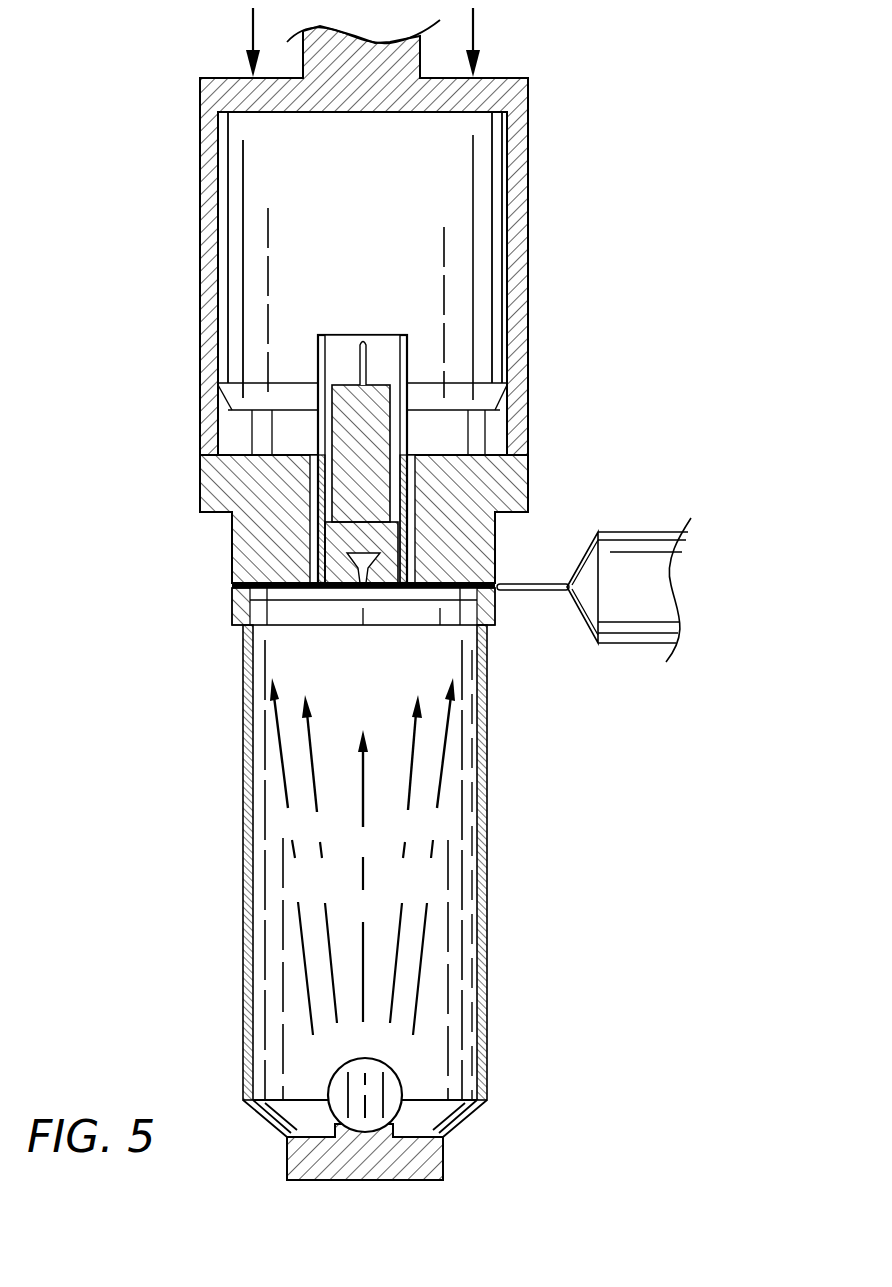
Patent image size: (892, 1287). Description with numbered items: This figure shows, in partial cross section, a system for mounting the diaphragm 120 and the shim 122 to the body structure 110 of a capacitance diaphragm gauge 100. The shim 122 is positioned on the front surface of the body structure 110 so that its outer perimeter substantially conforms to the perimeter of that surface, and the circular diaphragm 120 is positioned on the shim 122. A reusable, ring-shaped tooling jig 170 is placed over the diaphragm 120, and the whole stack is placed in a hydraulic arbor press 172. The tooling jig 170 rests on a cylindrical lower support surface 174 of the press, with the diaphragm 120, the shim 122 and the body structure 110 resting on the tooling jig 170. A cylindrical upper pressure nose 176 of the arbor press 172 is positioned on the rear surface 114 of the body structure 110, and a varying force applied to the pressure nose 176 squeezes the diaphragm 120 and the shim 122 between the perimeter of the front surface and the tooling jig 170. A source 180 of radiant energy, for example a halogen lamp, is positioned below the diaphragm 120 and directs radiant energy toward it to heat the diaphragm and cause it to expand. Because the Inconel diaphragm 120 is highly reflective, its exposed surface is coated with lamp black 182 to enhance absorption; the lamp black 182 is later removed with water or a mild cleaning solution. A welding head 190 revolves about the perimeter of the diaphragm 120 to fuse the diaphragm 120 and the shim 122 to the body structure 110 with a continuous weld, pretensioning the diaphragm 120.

The capacitance diaphragm gauge 100 is at (190, 516).
The body structure 110 is at (525, 475).
The rear surface 114 is at (263, 450).
The diaphragm 120 is at (233, 608).
The shim 122 is at (233, 585).
The tooling jig 170 is at (500, 613).
The hydraulic arbor press 172 is at (552, 177).
The lower support surface 174 is at (482, 698).
The upper pressure nose 176 is at (515, 366).
The source of radiant energy 180 is at (387, 1062).
The lamp black 182 is at (318, 580).
The welding head 190 is at (580, 557).